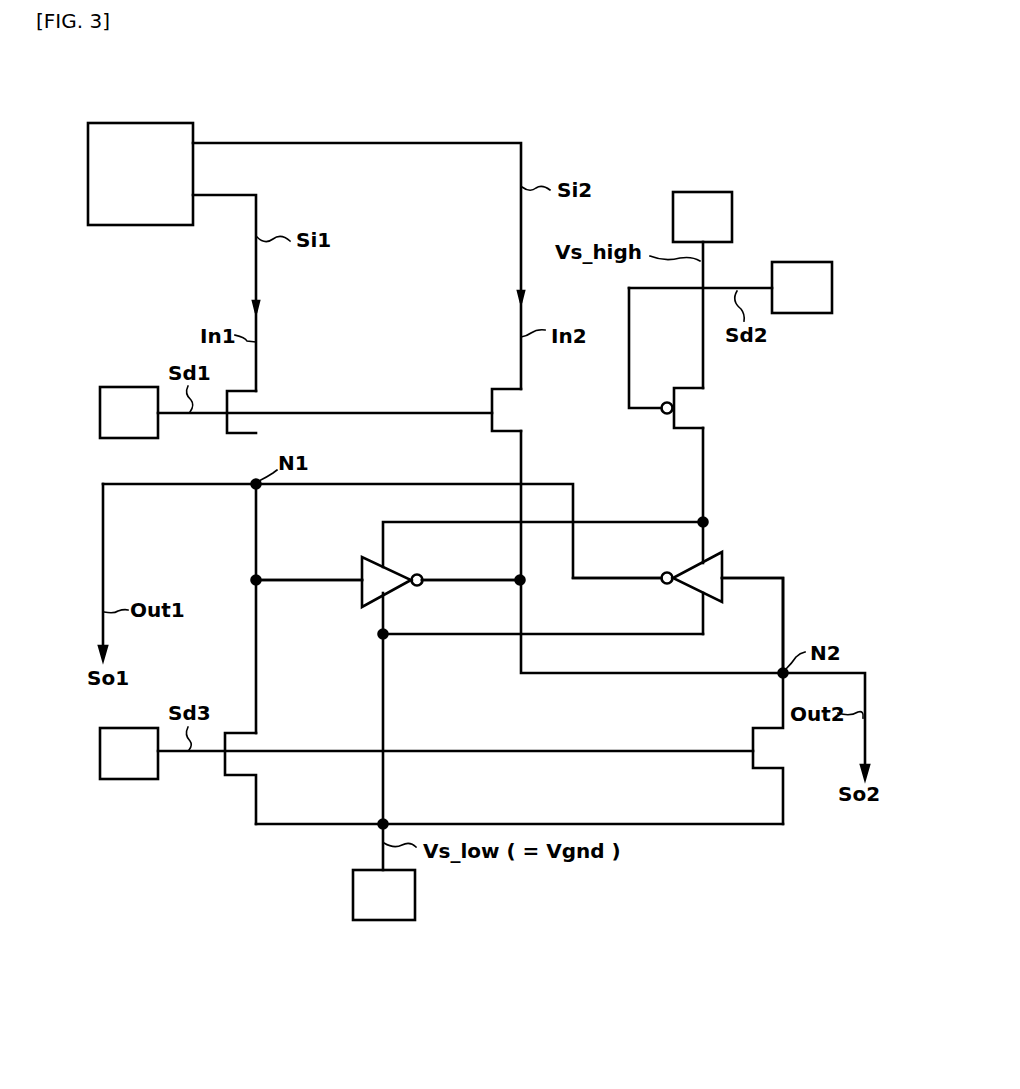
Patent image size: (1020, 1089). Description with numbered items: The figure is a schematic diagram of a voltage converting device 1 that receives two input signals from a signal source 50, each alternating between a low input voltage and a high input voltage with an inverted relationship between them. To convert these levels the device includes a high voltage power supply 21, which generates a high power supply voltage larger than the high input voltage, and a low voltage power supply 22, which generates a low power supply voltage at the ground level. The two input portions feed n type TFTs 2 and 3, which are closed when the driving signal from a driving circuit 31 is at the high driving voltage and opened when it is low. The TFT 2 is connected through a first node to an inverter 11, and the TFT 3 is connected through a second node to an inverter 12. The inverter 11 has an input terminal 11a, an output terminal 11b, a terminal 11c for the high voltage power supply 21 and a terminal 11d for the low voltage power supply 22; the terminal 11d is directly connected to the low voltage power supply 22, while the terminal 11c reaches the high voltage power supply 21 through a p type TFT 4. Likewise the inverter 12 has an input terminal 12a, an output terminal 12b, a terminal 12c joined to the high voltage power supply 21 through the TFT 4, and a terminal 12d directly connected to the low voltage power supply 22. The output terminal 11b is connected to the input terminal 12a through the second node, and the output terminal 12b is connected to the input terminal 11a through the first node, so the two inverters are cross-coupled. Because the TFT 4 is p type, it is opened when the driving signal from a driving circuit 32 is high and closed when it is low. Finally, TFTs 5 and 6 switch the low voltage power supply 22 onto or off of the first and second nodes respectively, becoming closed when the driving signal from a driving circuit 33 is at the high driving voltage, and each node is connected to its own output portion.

The voltage converting device 1 is at (818, 172).
The n type TFT 2 is at (266, 398).
The n type TFT 3 is at (526, 412).
The p type TFT 4 is at (708, 414).
The TFT 5 is at (266, 740).
The TFT 6 is at (776, 751).
The inverter 11 is at (374, 565).
The input terminal 11a is at (312, 578).
The output terminal 11b is at (470, 578).
The terminal for the high voltage power supply 11c is at (386, 543).
The terminal for the low voltage power supply 11d is at (381, 625).
The inverter 12 is at (712, 568).
The input terminal 12a is at (752, 580).
The output terminal 12b is at (627, 576).
The terminal for the high voltage power supply 12c is at (704, 540).
The terminal for the low voltage power supply 12d is at (704, 620).
The high voltage power supply 21 is at (703, 198).
The low voltage power supply 22 is at (405, 896).
The driving circuit 31 is at (128, 396).
The driving circuit 32 is at (801, 274).
The driving circuit 33 is at (130, 768).
The signal source 50 is at (147, 138).